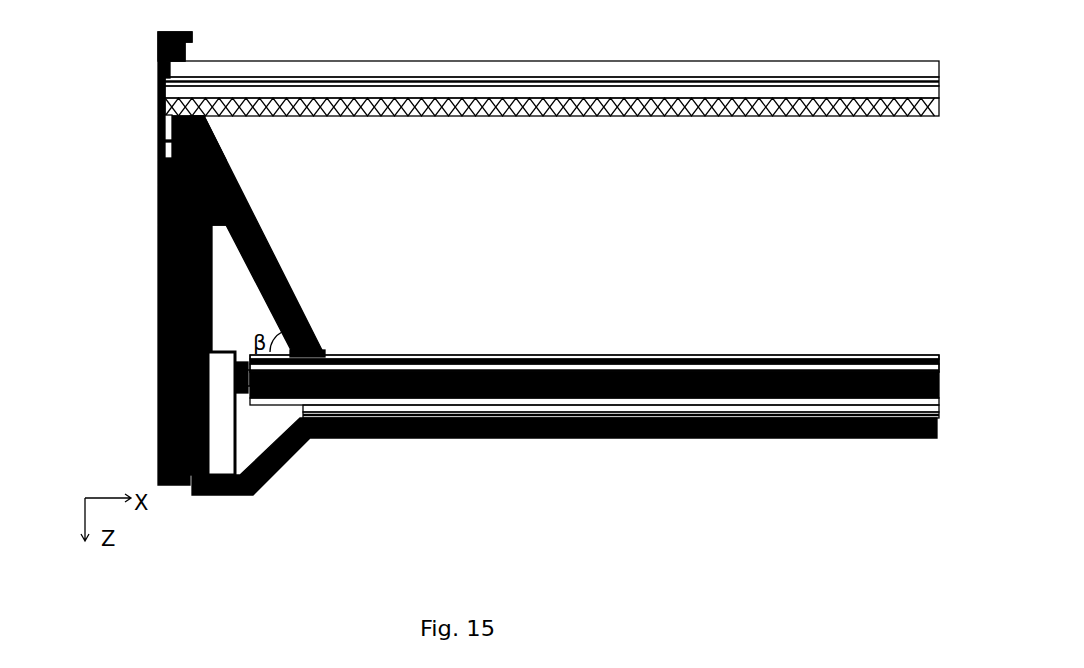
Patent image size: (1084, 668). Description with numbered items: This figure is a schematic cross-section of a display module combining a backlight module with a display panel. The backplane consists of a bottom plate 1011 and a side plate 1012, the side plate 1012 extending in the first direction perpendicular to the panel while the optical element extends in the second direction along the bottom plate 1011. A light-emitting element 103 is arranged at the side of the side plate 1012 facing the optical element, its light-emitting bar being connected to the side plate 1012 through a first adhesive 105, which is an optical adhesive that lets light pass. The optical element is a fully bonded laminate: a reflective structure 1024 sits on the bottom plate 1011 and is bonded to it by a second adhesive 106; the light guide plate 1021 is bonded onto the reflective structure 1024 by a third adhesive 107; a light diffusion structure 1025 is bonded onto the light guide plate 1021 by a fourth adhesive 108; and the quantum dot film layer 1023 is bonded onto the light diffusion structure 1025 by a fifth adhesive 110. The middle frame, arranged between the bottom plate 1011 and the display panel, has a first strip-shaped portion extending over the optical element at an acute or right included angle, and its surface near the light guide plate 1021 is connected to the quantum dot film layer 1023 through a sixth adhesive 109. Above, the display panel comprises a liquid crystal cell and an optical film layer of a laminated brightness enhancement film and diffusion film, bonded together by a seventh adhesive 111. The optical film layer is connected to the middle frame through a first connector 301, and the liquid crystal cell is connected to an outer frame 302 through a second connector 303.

The outer frame 302 is at (162, 50).
The second connector 303 is at (163, 75).
The first connector 301 is at (168, 117).
The seventh adhesive 111 is at (470, 83).
The side plate 1012 is at (198, 325).
The light-emitting element 103 is at (235, 377).
The first adhesive 105 is at (212, 427).
The sixth adhesive 109 is at (324, 352).
The quantum dot film layer 1023 is at (425, 355).
The light guide plate 1021 is at (477, 387).
The third adhesive 107 is at (620, 410).
The fourth adhesive 108 is at (685, 368).
The reflective structure 1024 is at (725, 417).
The light diffusion structure 1025 is at (842, 340).
The fifth adhesive 110 is at (880, 358).
The bottom plate 1011 is at (483, 423).
The second adhesive 106 is at (643, 417).